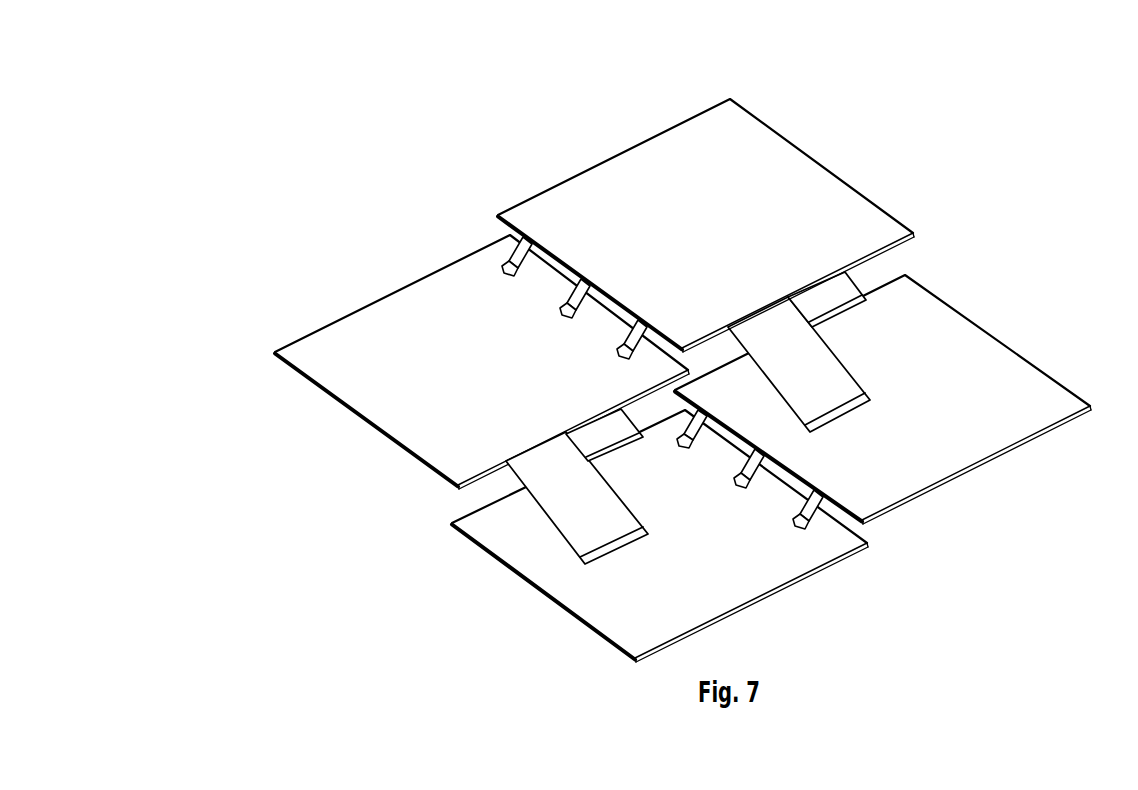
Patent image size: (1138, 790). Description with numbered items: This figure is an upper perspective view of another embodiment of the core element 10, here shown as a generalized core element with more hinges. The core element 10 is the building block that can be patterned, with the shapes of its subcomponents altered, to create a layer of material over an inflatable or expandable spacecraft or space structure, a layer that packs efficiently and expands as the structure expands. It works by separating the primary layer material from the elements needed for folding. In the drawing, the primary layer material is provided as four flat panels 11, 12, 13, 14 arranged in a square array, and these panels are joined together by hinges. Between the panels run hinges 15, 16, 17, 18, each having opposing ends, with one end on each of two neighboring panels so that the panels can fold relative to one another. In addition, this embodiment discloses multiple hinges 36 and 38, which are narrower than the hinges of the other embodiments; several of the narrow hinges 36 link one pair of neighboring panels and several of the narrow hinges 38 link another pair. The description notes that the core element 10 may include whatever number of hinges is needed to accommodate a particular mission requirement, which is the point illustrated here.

The core element 10 is at (993, 177).
The panel 11 is at (787, 138).
The panel 12 is at (962, 422).
The panel 13 is at (353, 352).
The panel 14 is at (667, 585).
The hinge 15 is at (848, 294).
The hinge 16 is at (797, 357).
The hinge 17 is at (593, 442).
The hinge 18 is at (578, 522).
The hinge 36 is at (624, 352).
The hinge 38 is at (690, 445).